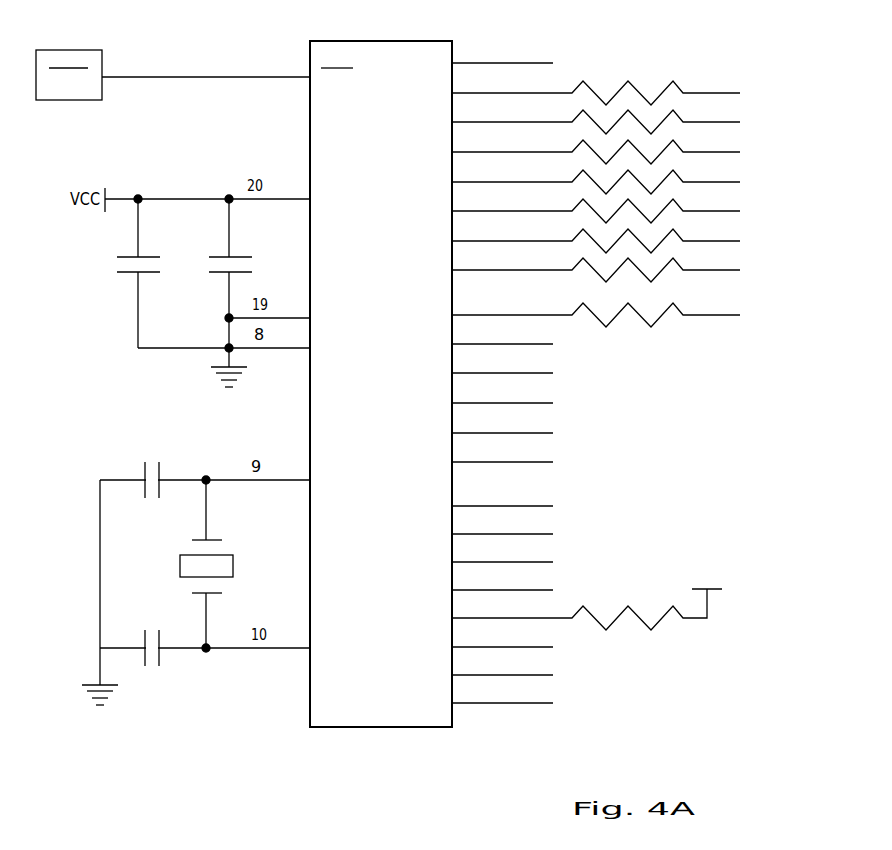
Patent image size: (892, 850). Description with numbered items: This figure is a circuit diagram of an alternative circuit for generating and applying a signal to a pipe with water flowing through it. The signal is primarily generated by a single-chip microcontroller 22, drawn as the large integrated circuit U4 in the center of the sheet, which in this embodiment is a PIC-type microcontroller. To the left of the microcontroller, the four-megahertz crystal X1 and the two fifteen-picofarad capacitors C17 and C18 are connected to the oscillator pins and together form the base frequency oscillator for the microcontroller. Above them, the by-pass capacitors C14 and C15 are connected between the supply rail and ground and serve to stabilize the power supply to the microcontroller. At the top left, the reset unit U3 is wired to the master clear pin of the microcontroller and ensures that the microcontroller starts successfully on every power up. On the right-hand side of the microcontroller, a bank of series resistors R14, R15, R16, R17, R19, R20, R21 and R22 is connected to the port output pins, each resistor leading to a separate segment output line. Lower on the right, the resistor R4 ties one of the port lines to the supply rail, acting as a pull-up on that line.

The single-chip microcontroller 22 is at (398, 384).
The reset IC DS1233-10 U3 is at (173, 73).
The microcontroller PIC16C75A U4 is at (430, 384).
The by-pass capacitor C14 is at (254, 283).
The by-pass capacitor C15 is at (161, 273).
The 15 pF capacitor C17 is at (154, 481).
The 15 pF capacitor C18 is at (154, 649).
The 4.00 MHz crystal X1 is at (239, 564).
The resistor 33E R4 is at (637, 608).
The resistor 270R R14 is at (692, 83).
The resistor 270R R15 is at (692, 112).
The resistor 270R R16 is at (692, 142).
The resistor 270R R17 is at (692, 172).
The resistor 270R R19 is at (692, 201).
The resistor 270R R20 is at (692, 231).
The resistor 270R R21 is at (692, 260).
The resistor 270R R22 is at (692, 304).